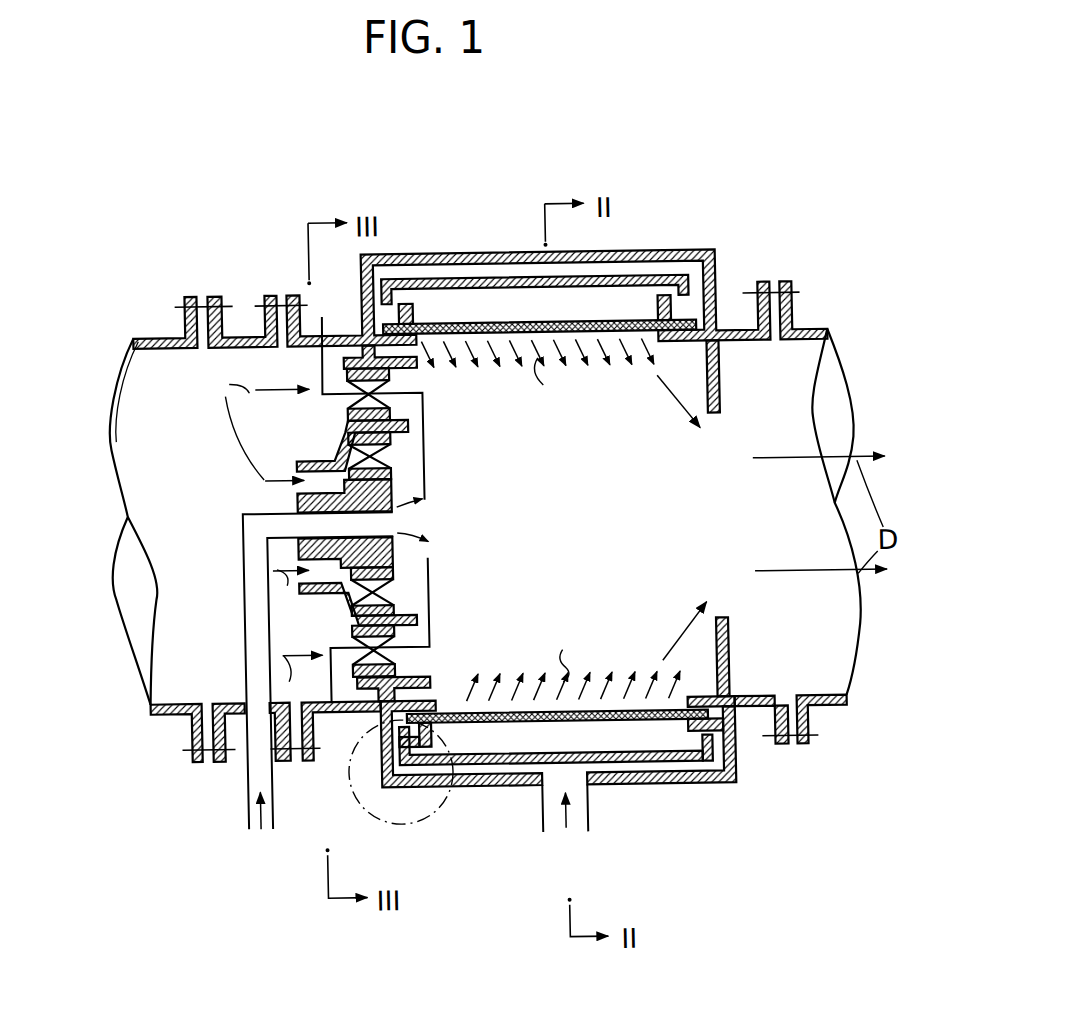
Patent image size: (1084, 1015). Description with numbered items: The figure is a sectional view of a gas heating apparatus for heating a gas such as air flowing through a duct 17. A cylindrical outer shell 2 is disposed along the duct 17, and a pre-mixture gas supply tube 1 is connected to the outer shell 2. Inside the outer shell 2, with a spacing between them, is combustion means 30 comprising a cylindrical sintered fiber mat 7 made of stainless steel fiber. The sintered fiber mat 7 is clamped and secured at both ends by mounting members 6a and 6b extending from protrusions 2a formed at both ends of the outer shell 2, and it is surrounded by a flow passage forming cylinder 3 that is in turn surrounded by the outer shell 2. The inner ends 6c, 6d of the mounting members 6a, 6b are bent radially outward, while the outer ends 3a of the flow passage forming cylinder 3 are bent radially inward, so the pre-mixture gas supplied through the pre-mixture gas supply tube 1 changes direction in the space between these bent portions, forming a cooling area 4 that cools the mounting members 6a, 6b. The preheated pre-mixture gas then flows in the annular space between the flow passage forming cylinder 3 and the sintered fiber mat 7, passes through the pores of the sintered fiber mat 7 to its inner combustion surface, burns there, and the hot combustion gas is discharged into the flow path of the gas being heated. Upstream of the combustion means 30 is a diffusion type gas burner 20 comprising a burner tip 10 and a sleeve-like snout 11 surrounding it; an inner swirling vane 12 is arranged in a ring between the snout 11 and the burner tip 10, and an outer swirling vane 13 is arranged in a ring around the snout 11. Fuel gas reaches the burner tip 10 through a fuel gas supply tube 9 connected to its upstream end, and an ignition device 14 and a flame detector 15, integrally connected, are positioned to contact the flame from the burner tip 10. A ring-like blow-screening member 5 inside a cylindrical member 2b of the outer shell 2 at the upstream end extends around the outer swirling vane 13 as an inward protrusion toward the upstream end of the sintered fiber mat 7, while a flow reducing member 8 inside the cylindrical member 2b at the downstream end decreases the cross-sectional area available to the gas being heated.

The pre-mixture gas supply tube 1 is at (590, 815).
The cylindrical outer shell 2 is at (594, 786).
The protrusions 2a is at (375, 772).
The cylindrical member 2b is at (318, 712).
The flow passage forming cylinder 3 is at (455, 757).
The outer ends of the flow passage forming cylinder 3a is at (692, 760).
The cooling area 4 is at (402, 826).
The blow-screening member 5 is at (415, 668).
The mounting member 6a is at (694, 705).
The mounting member 6b is at (445, 712).
The inner end of the mounting member 6c is at (688, 735).
The inner end of the mounting member 6d is at (445, 728).
The cylindrical sintered fiber mat 7 is at (624, 722).
The flow reducing member 8 is at (728, 625).
The fuel gas supply tube 9 is at (268, 800).
The burner tip 10 is at (298, 497).
The snout 11 is at (318, 585).
The inner swirling vane 12 is at (390, 453).
The outer swirling vane 13 is at (392, 376).
The ignition device 14 is at (428, 470).
The flame detector 15 is at (428, 576).
The duct 17 is at (160, 713).
The diffusion type gas burner 20 is at (250, 465).
The combustion means 30 is at (654, 797).